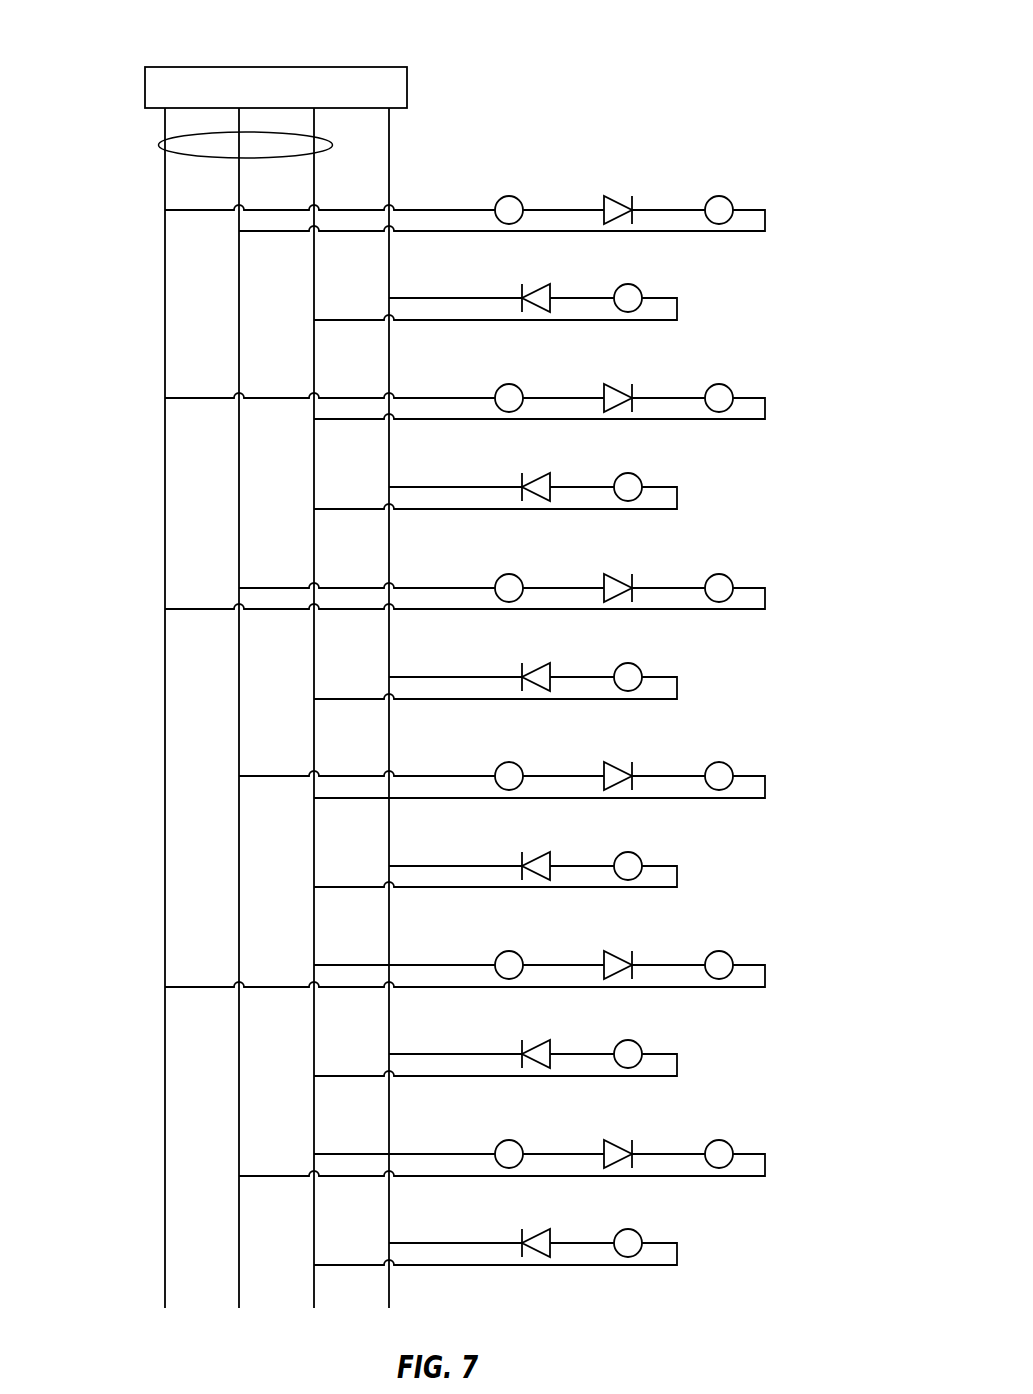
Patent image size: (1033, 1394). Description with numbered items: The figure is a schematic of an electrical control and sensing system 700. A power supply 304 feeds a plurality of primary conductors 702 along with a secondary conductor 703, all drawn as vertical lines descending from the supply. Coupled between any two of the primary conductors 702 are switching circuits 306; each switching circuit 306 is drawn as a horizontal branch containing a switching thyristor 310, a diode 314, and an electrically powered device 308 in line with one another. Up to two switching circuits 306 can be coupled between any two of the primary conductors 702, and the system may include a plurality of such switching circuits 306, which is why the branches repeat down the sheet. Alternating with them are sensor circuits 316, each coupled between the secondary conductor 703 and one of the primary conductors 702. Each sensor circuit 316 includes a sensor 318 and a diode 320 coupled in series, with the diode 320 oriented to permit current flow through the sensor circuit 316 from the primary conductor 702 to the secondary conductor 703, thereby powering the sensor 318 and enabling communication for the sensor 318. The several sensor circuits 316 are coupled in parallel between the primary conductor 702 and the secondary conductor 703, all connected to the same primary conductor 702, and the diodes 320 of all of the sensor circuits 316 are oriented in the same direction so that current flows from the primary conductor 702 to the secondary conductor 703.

The electrical control and sensing system 700 is at (130, 42).
The power supply 304 is at (409, 88).
The secondary conductor 703 is at (391, 133).
The primary conductors 702 is at (168, 138).
The switching circuit 306 is at (776, 218).
The switching thyristor 310 is at (511, 196).
The diode 314 is at (614, 197).
The electrically powered device 308 is at (721, 196).
The sensor circuit 316 is at (690, 311).
The sensor 318 is at (640, 289).
The diode 320 is at (554, 289).